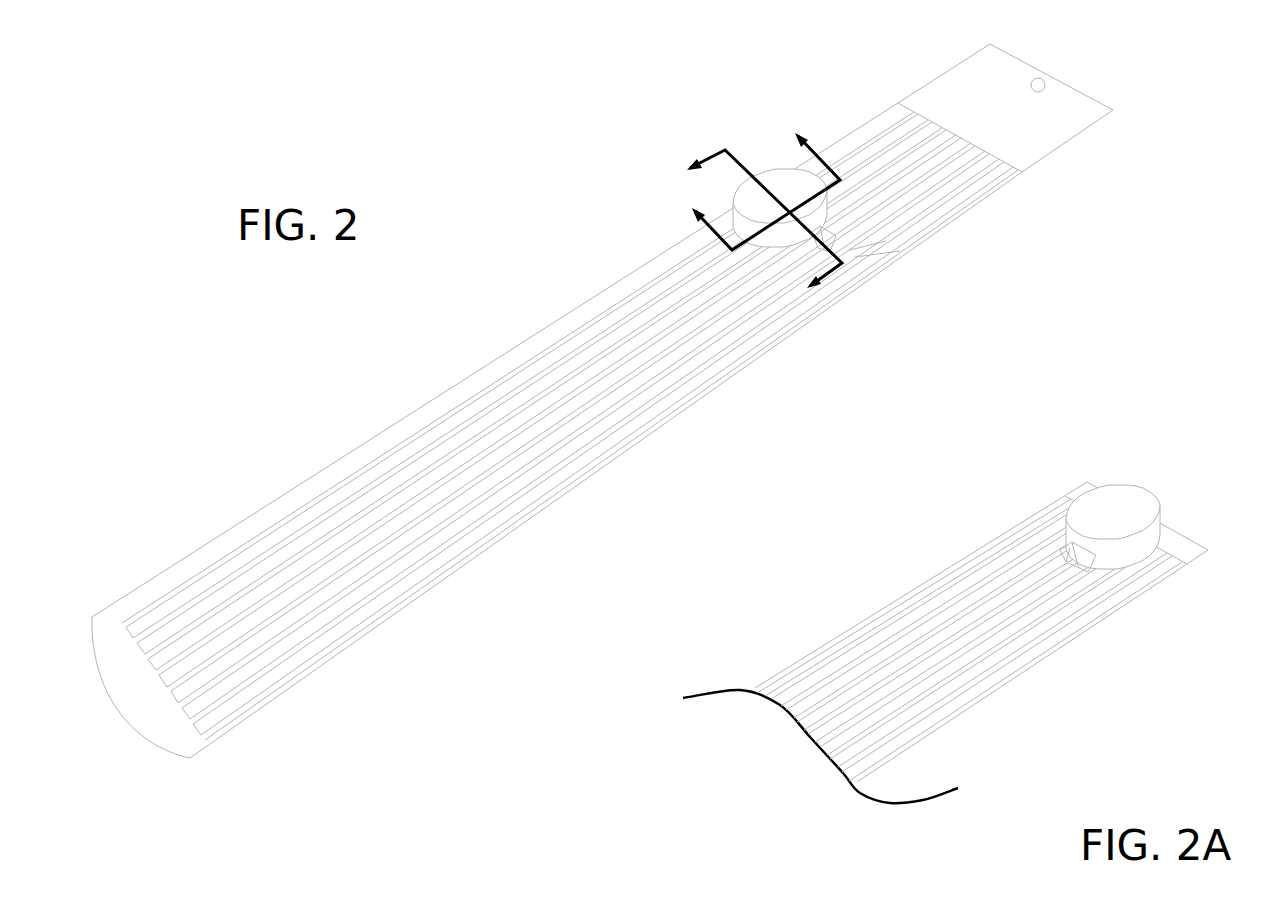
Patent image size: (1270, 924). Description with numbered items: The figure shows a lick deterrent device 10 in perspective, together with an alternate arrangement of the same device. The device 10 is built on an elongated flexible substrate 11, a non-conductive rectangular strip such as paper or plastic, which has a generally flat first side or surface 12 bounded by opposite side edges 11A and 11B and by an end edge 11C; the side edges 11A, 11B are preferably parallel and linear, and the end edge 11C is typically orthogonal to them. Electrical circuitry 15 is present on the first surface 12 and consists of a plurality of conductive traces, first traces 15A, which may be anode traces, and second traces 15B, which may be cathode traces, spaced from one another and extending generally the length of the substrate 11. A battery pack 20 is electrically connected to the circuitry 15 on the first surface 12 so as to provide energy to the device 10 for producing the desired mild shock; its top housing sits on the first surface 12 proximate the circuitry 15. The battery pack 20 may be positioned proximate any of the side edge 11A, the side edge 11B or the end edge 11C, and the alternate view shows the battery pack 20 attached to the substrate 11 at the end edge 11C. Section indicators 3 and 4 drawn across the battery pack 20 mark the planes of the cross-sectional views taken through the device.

In FIG. 2, the lick deterrent device 10 is at (522, 196).
In FIG. 2, the elongated flexible substrate 11 is at (398, 410).
In FIG. 2A, the elongated flexible substrate 11 is at (961, 553).
In FIG. 2, the side edge 11A is at (857, 125).
In FIG. 2A, the side edge 11A is at (1025, 517).
In FIG. 2, the side edge 11B is at (822, 315).
In FIG. 2A, the side edge 11B is at (1153, 583).
In FIG. 2, the end edge 11C is at (1073, 91).
In FIG. 2A, the end edge 11C is at (1198, 537).
In FIG. 2, the first side or surface 12 is at (275, 500).
In FIG. 2A, the first side or surface 12 is at (883, 608).
In FIG. 2, the electrical circuitry 15 is at (549, 326).
In FIG. 2A, the electrical circuitry 15 is at (814, 652).
In FIG. 2, the first traces 15A is at (431, 548).
In FIG. 2A, the first traces 15A is at (972, 678).
In FIG. 2, the second traces 15B is at (611, 456).
In FIG. 2A, the second traces 15B is at (1052, 648).
In FIG. 2, the battery pack 20 is at (768, 160).
In FIG. 2A, the battery pack 20 is at (1140, 475).
In FIG. 2, the section line 3- 3 is at (767, 218).
In FIG. 2, the section line 4- 4 is at (755, 181).